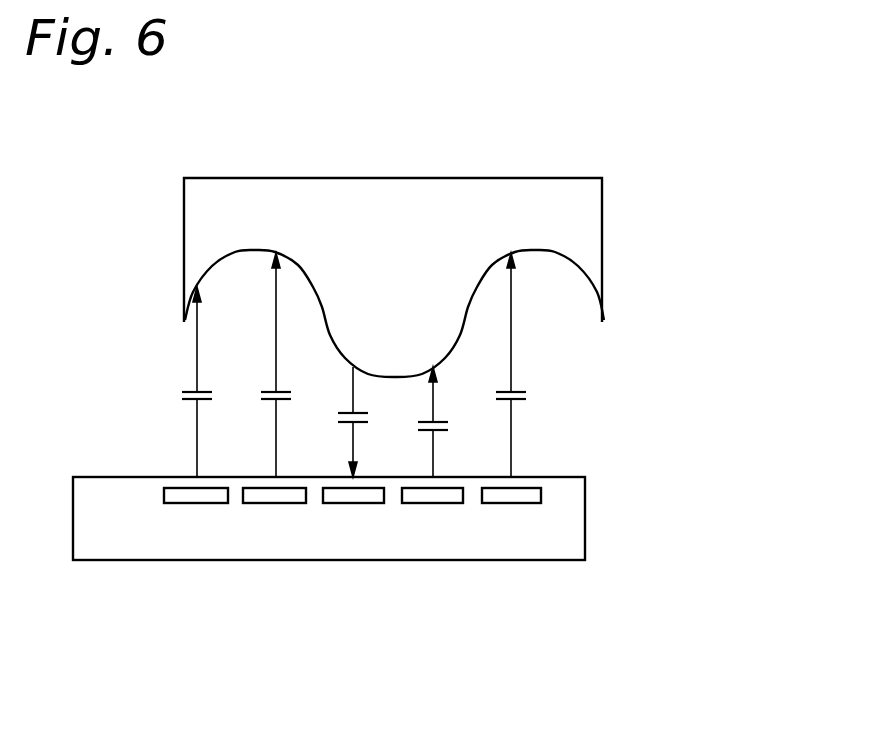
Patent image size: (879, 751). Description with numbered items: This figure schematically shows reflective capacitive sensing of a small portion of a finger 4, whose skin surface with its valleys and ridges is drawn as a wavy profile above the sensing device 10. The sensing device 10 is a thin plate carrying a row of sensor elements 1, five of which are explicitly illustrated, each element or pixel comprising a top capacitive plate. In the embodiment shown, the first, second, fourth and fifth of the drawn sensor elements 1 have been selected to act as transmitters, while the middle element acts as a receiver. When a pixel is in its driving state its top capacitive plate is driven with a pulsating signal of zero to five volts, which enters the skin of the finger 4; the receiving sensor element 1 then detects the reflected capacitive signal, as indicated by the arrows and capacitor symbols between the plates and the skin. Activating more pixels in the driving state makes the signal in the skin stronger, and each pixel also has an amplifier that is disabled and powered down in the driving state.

The sensor element 1 is at (178, 503).
The finger 4 is at (603, 250).
The sensing device 10 is at (567, 562).